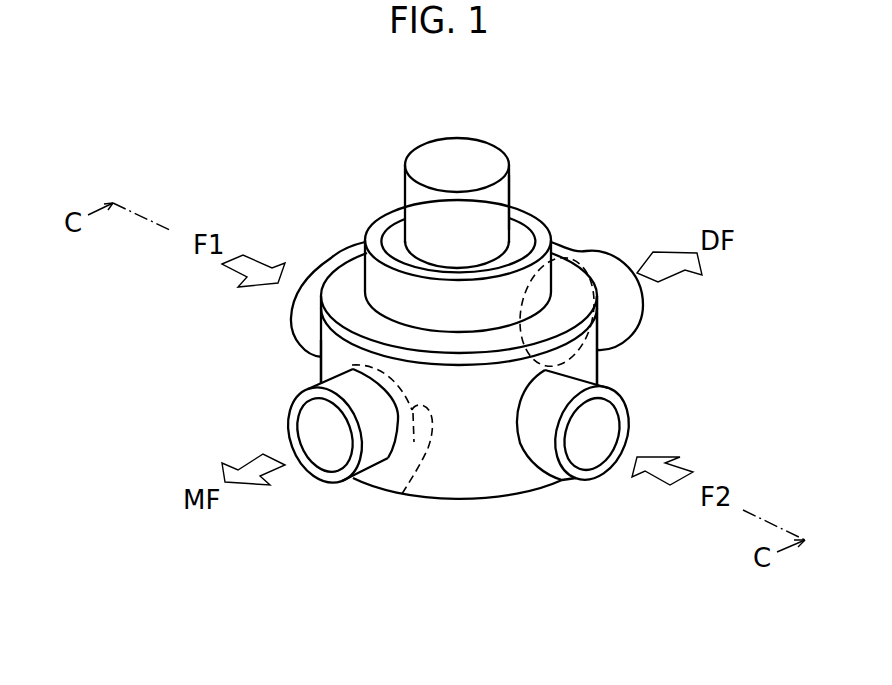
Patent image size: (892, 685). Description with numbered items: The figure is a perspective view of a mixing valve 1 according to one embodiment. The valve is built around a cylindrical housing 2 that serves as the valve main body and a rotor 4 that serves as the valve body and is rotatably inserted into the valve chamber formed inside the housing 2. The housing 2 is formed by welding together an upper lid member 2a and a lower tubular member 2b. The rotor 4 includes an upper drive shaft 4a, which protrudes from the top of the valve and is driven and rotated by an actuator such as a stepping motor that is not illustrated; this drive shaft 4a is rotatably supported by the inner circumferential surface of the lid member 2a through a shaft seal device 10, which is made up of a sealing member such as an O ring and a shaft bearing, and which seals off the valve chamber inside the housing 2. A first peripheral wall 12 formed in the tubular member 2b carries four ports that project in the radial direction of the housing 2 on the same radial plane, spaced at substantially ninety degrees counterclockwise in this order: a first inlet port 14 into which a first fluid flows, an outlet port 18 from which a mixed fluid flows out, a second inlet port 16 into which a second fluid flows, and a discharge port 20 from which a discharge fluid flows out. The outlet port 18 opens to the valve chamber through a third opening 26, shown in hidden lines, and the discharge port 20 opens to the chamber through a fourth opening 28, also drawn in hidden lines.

The mixing valve 1 is at (547, 133).
The housing 2 is at (459, 425).
The lid member 2a is at (452, 361).
The tubular member 2b is at (503, 466).
The rotor 4 is at (405, 170).
The drive shaft 4a is at (497, 204).
The shaft seal device 10 is at (395, 237).
The first peripheral wall 12 is at (598, 376).
The first inlet port 14 is at (291, 314).
The second inlet port 16 is at (626, 403).
The outlet port 18 is at (289, 412).
The discharge port 20 is at (615, 252).
The third opening 26 is at (400, 497).
The fourth opening 28 is at (571, 257).